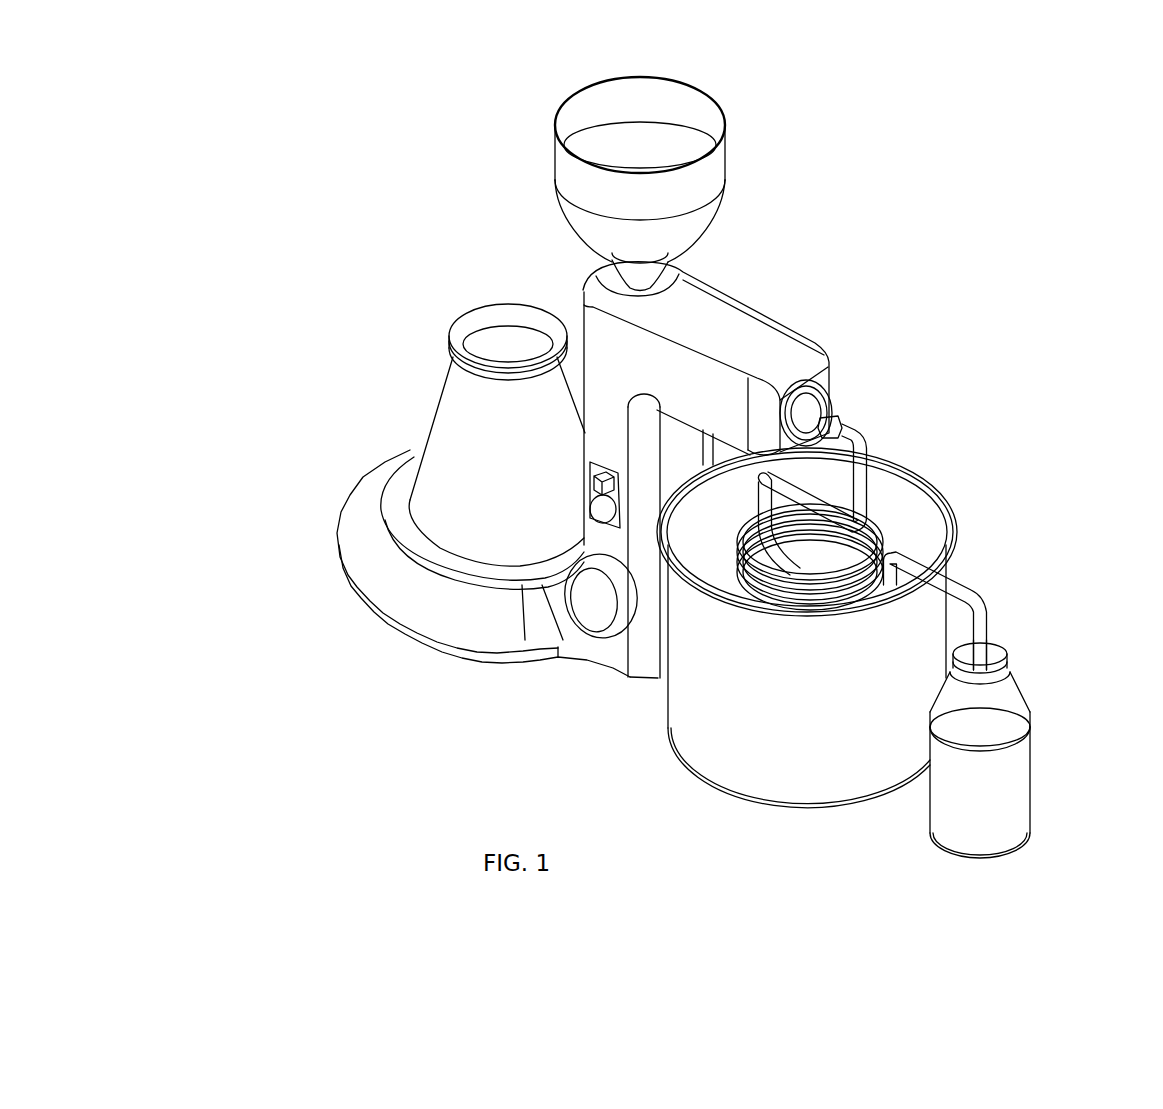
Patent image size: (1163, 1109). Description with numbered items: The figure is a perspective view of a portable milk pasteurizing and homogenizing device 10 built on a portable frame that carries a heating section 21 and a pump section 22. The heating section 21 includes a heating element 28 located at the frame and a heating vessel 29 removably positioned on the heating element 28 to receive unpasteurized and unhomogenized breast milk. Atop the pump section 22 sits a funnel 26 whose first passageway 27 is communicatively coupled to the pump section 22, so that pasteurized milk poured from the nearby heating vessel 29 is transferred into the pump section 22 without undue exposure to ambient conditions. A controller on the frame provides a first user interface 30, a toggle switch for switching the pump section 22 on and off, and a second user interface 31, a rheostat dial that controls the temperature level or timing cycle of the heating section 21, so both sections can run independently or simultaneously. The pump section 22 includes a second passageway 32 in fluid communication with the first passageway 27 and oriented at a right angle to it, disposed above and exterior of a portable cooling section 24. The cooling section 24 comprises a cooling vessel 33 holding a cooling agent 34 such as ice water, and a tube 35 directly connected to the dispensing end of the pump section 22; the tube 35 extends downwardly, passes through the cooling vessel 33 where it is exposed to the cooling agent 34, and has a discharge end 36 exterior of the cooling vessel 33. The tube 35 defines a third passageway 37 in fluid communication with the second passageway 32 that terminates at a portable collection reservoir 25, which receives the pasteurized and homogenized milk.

The portable milk pasteurizing and homogenizing device 10 is at (1003, 186).
The heating section 21 is at (336, 470).
The pump section 22 is at (806, 308).
The cooling section 24 is at (960, 442).
The collection reservoir 25 is at (1015, 767).
The funnel 26 is at (566, 166).
The first passageway 27 is at (637, 283).
The heating element 28 is at (402, 532).
The heating vessel 29 is at (457, 400).
The first user interface 30 is at (598, 512).
The second user interface 31 is at (590, 603).
The second passageway 32 is at (822, 428).
The cooling vessel 33 is at (862, 767).
The cooling agent 34 is at (913, 536).
The tube 35 is at (783, 604).
The discharge end 36 is at (975, 640).
The third passageway 37 is at (953, 588).